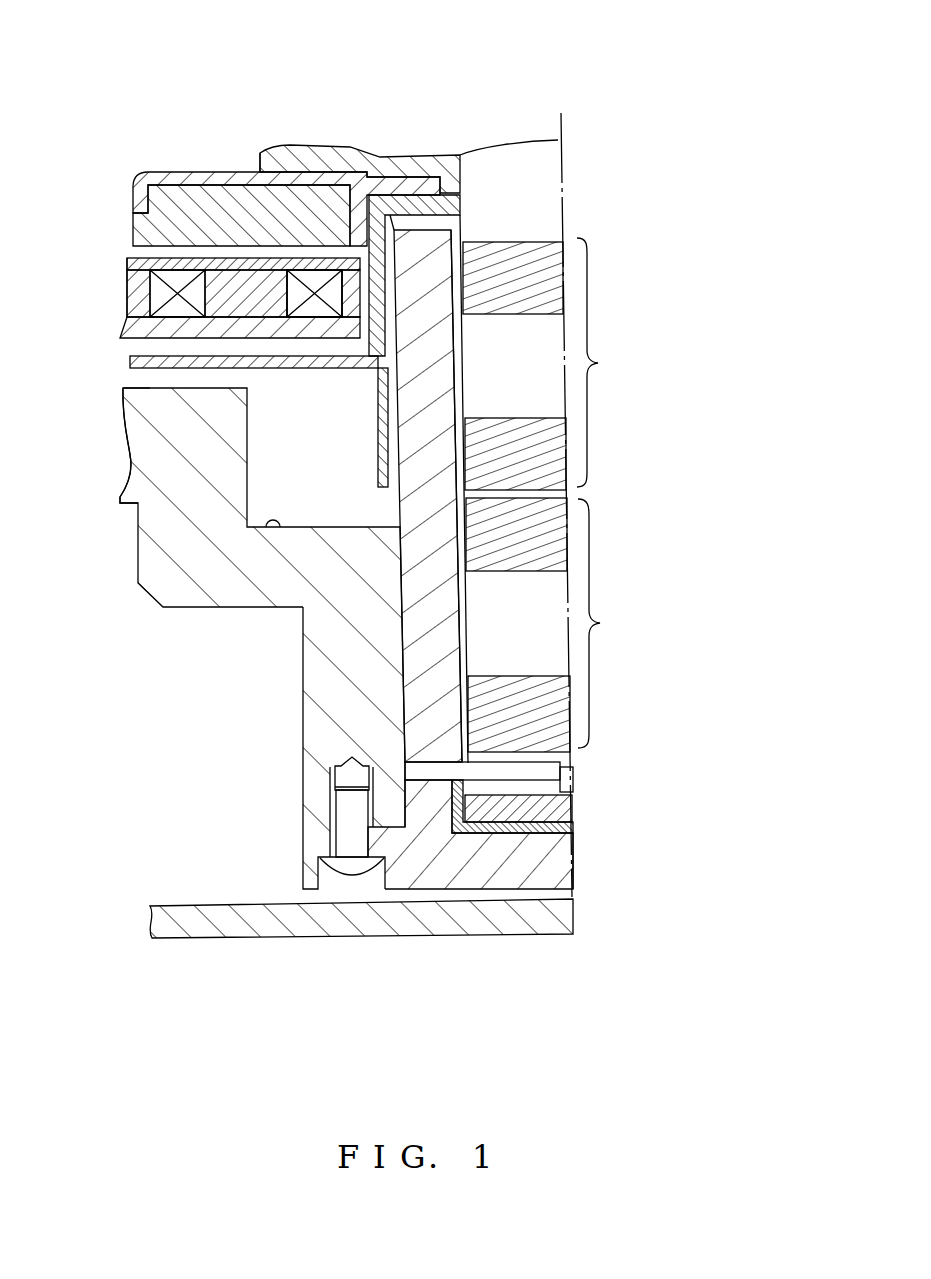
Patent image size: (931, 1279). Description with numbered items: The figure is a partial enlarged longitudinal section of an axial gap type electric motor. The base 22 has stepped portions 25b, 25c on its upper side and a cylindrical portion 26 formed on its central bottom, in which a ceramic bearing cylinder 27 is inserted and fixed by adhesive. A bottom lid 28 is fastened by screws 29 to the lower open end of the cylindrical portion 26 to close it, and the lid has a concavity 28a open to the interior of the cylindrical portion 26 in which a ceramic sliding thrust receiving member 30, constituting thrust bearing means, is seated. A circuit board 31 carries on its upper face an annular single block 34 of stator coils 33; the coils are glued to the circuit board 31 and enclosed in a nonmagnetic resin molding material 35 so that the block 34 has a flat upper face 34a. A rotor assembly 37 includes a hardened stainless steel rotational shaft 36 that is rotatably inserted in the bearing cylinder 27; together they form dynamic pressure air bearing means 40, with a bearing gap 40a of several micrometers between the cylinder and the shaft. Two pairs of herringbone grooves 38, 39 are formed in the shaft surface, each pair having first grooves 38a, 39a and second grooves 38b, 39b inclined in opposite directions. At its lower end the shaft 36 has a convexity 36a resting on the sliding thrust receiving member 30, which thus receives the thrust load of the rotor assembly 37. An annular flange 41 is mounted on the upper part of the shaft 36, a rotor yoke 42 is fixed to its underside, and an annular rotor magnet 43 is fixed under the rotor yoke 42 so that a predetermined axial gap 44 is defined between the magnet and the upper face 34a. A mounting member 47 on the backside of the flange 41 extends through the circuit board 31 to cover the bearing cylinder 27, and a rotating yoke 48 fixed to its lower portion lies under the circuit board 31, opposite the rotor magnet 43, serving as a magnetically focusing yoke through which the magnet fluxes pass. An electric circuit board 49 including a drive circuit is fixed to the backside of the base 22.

The base 22 is at (157, 593).
The stepped portion 25b is at (125, 400).
The stepped portion 25c is at (268, 530).
The cylindrical portion 26 is at (305, 748).
The bearing cylinder 27 is at (455, 727).
The bottom lid 28 is at (470, 873).
The concavity 28a is at (550, 837).
The screws 29 is at (348, 874).
The sliding thrust receiving member 30 is at (558, 821).
The circuit board 31 is at (128, 361).
The stator coils 33 is at (120, 318).
The annular single block 34 is at (126, 297).
The upper face 34a is at (297, 272).
The molding material 35 is at (125, 285).
The rotational shaft 36 is at (547, 157).
The convexity 36a is at (574, 810).
The rotor assembly 37 is at (250, 150).
The herringbone grooves 38 is at (605, 362).
The first grooves 38a is at (512, 240).
The second grooves 38b is at (498, 428).
The herringbone grooves 39 is at (553, 625).
The first grooves 39a is at (498, 564).
The second grooves 39b is at (573, 776).
The dynamic pressure air bearing means 40 is at (308, 778).
The bearing gap 40a is at (457, 597).
The annular flange 41 is at (333, 150).
The rotor yoke 42 is at (162, 174).
The annular rotor magnet 43 is at (130, 232).
The axial gap 44 is at (127, 250).
The mounting member 47 is at (455, 200).
The rotating yoke 48 is at (120, 380).
The electric circuit board 49 is at (238, 938).